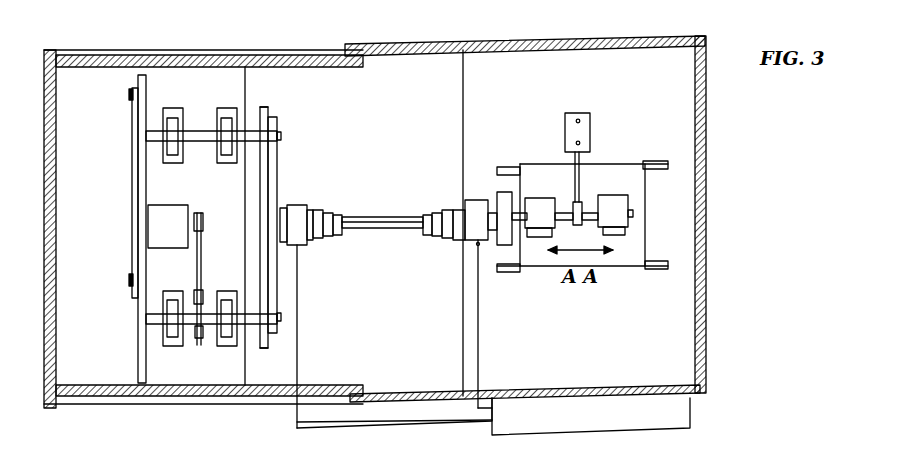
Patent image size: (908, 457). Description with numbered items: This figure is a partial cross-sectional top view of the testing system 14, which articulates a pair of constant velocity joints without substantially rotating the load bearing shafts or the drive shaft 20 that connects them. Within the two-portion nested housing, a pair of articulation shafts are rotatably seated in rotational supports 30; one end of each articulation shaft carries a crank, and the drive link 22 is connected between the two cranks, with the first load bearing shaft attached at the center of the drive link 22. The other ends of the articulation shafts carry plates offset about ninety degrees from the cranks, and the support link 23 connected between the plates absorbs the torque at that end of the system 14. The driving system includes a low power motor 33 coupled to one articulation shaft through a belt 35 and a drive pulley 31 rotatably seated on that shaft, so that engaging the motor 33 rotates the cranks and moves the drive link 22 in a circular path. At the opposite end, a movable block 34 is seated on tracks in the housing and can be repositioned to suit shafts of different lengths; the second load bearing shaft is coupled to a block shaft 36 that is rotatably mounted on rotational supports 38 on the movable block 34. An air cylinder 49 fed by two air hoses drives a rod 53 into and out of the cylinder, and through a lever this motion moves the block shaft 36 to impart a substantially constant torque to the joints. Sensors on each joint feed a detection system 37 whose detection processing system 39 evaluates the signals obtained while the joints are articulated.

The testing system 14 is at (722, 204).
The support link 23 is at (137, 200).
The rotational supports 30 is at (222, 163).
The motor 33 is at (150, 233).
The belt 35 is at (202, 266).
The drive pulley 31 is at (197, 296).
The drive link 22 is at (276, 300).
The drive shaft 20 is at (383, 219).
The movable block 34 is at (661, 272).
The block shaft 36 is at (514, 246).
The rotational supports 38 is at (540, 218).
The rod 53 is at (581, 181).
The air cylinder 49 is at (590, 128).
The detection system 37 is at (492, 428).
The detection processing system 39 is at (587, 410).